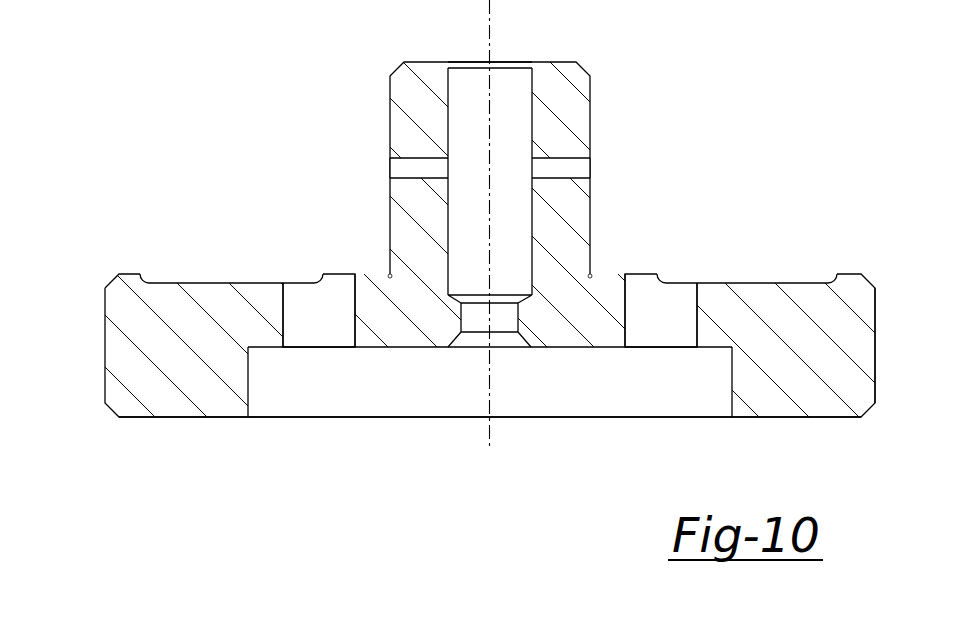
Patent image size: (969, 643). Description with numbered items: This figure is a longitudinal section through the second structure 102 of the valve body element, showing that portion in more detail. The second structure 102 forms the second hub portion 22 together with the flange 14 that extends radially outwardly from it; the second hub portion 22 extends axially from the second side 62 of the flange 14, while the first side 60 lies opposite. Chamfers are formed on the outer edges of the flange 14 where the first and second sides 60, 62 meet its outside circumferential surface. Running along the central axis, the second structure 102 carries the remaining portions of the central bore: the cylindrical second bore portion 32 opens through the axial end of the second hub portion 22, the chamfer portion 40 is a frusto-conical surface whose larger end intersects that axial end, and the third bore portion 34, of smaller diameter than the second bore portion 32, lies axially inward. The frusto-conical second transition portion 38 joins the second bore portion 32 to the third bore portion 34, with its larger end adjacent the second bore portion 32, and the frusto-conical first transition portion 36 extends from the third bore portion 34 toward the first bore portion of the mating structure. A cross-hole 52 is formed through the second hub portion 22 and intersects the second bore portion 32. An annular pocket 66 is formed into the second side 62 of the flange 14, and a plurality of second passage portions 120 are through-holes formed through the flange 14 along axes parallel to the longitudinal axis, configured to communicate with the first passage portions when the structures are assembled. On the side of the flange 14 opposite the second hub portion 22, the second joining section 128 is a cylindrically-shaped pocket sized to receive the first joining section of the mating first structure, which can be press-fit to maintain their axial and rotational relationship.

The flange 14 is at (160, 344).
The second hub portion 22 is at (573, 110).
The second bore portion 32 is at (462, 108).
The third bore portion 34 is at (472, 314).
The first transition portion 36 is at (475, 337).
The second transition portion 38 is at (503, 297).
The chamfer portion 40 is at (466, 63).
The cross-hole 52 is at (408, 167).
The first side 60 is at (170, 418).
The second side 62 is at (130, 272).
The annular pocket 66 is at (805, 283).
The second structure 102 is at (817, 358).
The second passage portions 120 is at (315, 312).
The second joining section 128 is at (288, 402).